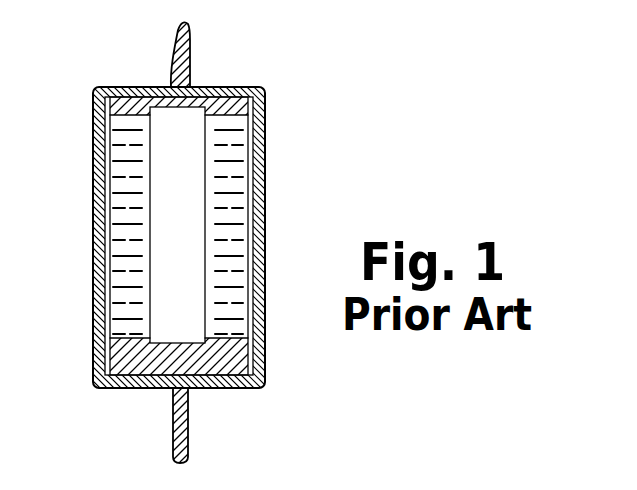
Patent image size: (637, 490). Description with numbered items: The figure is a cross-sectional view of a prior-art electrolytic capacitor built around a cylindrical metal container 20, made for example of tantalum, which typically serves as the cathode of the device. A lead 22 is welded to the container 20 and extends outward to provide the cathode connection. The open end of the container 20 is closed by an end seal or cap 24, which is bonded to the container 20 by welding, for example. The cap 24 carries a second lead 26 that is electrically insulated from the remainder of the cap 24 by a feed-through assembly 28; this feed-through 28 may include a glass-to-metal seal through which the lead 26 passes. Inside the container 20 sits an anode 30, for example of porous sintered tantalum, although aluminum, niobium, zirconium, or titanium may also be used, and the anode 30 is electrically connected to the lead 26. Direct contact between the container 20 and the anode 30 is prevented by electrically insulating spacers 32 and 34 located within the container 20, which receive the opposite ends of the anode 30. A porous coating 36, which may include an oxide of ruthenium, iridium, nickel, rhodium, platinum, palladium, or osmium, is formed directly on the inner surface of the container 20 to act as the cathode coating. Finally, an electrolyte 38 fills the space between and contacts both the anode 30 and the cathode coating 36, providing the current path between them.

The cylindrical metal container 20 is at (265, 243).
The lead 22 is at (185, 430).
The end seal or cap 24 is at (248, 87).
The second lead 26 is at (170, 62).
The feed-through assembly 28 is at (187, 87).
The anode 30 is at (190, 166).
The electrically insulating spacer 32 is at (205, 375).
The electrically insulating spacer 34 is at (127, 92).
The porous coating 36 is at (253, 217).
The electrolyte 38 is at (237, 307).